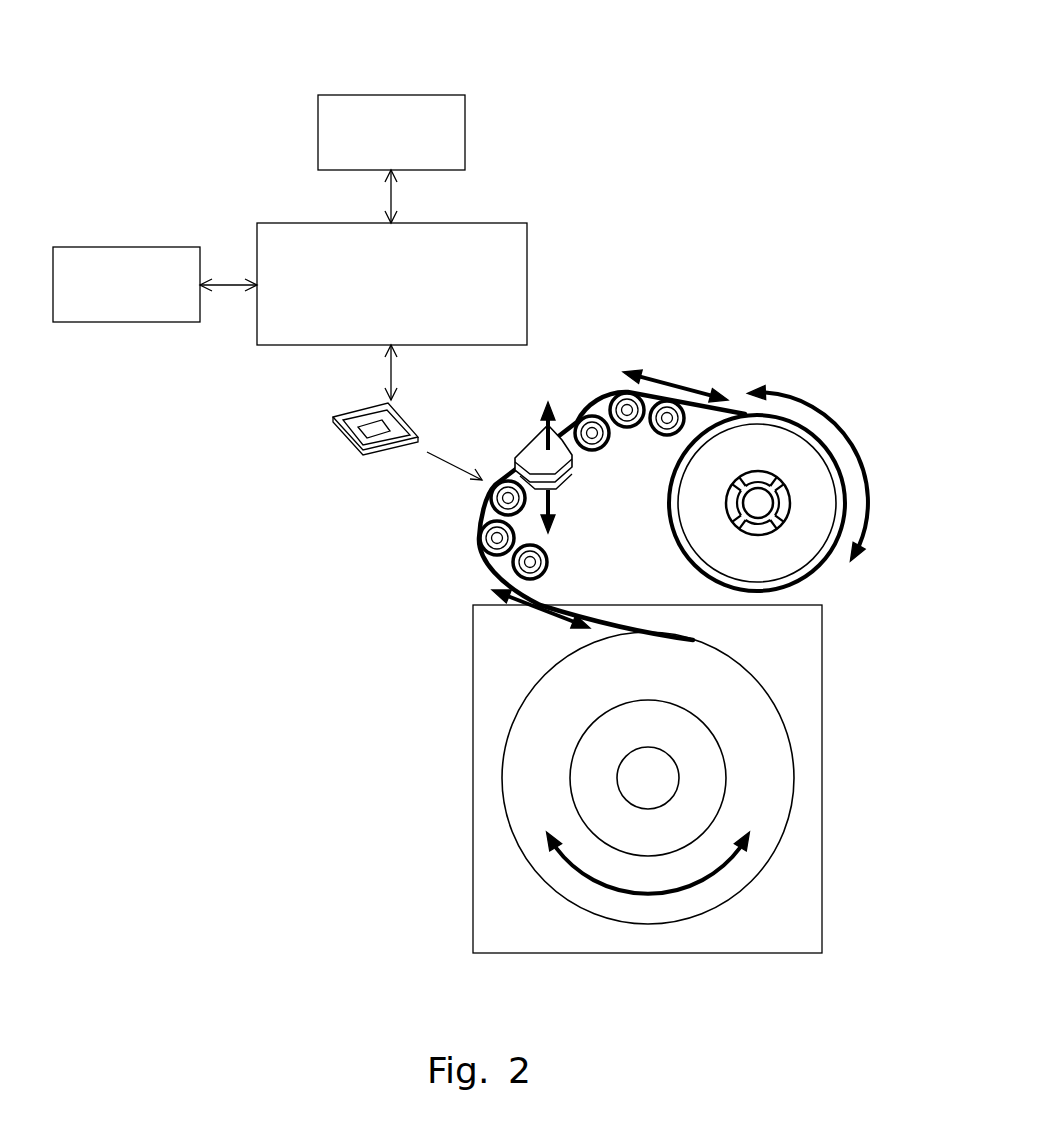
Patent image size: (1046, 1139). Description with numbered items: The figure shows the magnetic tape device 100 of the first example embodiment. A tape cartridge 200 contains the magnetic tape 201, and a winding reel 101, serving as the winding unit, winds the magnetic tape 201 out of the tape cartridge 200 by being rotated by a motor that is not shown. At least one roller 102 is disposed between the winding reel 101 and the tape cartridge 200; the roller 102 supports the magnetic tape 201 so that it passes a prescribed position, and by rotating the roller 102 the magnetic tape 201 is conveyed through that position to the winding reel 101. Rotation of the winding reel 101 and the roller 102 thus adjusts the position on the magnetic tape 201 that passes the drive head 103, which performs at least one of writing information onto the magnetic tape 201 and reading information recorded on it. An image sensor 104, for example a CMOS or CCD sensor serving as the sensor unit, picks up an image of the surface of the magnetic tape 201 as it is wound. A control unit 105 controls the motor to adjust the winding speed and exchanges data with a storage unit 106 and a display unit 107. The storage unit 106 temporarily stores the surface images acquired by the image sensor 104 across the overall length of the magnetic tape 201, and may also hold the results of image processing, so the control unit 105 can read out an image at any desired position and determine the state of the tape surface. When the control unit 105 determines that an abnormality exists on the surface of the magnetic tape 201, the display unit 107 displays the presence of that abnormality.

The magnetic tape device 100 is at (786, 26).
The winding reel 101 is at (792, 420).
The roller 102 is at (478, 540).
The drive head 103 is at (517, 455).
The image sensor 104 is at (347, 437).
The control unit 105 is at (510, 223).
The storage unit 106 is at (135, 247).
The display unit 107 is at (426, 95).
The tape cartridge 200 is at (473, 778).
The magnetic tape 201 is at (567, 592).